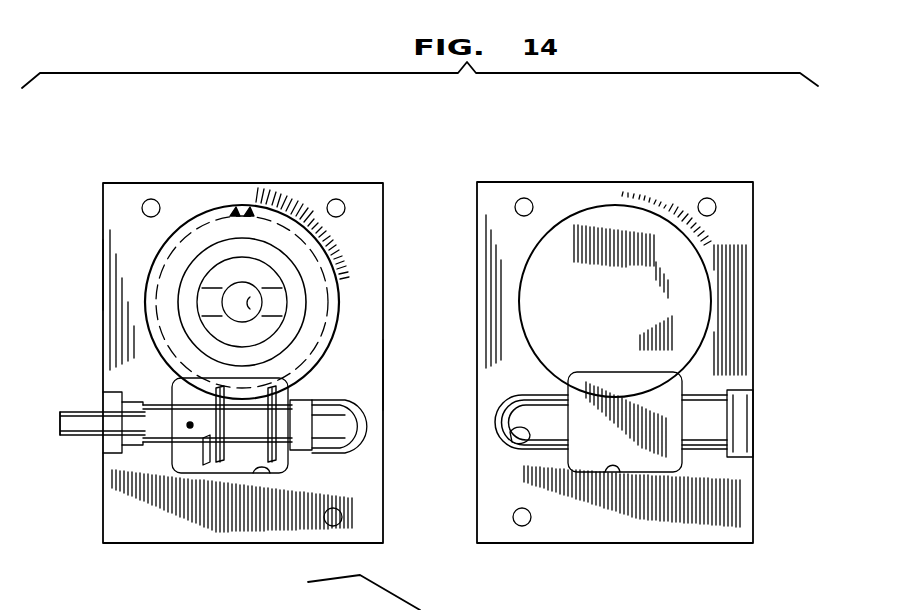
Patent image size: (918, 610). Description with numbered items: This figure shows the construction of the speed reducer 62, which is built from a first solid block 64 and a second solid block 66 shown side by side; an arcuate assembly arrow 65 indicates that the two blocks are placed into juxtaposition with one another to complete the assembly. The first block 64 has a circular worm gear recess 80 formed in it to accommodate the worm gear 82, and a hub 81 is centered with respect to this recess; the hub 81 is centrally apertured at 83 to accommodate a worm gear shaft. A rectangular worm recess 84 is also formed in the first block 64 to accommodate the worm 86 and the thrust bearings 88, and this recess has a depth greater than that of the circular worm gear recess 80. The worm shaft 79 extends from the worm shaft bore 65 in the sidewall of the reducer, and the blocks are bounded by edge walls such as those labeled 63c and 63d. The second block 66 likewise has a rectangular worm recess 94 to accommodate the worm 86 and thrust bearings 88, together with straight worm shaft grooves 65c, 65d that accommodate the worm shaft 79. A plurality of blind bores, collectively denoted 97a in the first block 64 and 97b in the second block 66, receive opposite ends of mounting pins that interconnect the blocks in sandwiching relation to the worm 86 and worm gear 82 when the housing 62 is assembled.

The first speed reducer 62 is at (664, 130).
The plate edge 63c is at (103, 272).
The plate edge 63d is at (383, 376).
The first solid block 64 is at (168, 172).
The worm shaft bore 65 is at (608, 148).
The straight worm shaft groove 65c is at (500, 440).
The straight worm shaft groove 65d is at (752, 443).
The second solid block 66 is at (537, 172).
The worm shaft 79 is at (82, 412).
The circular worm gear recess 80 is at (150, 300).
The hub 81 is at (283, 284).
The worm gear 82 is at (240, 207).
The central aperture 83 is at (252, 303).
The rectangular worm recess 84 is at (262, 473).
The worm 86 is at (222, 462).
The thrust bearings 88 is at (150, 398).
The rectangular worm recess 94 is at (612, 472).
The blind bores 97a is at (145, 201).
The blind bores 97b is at (515, 204).